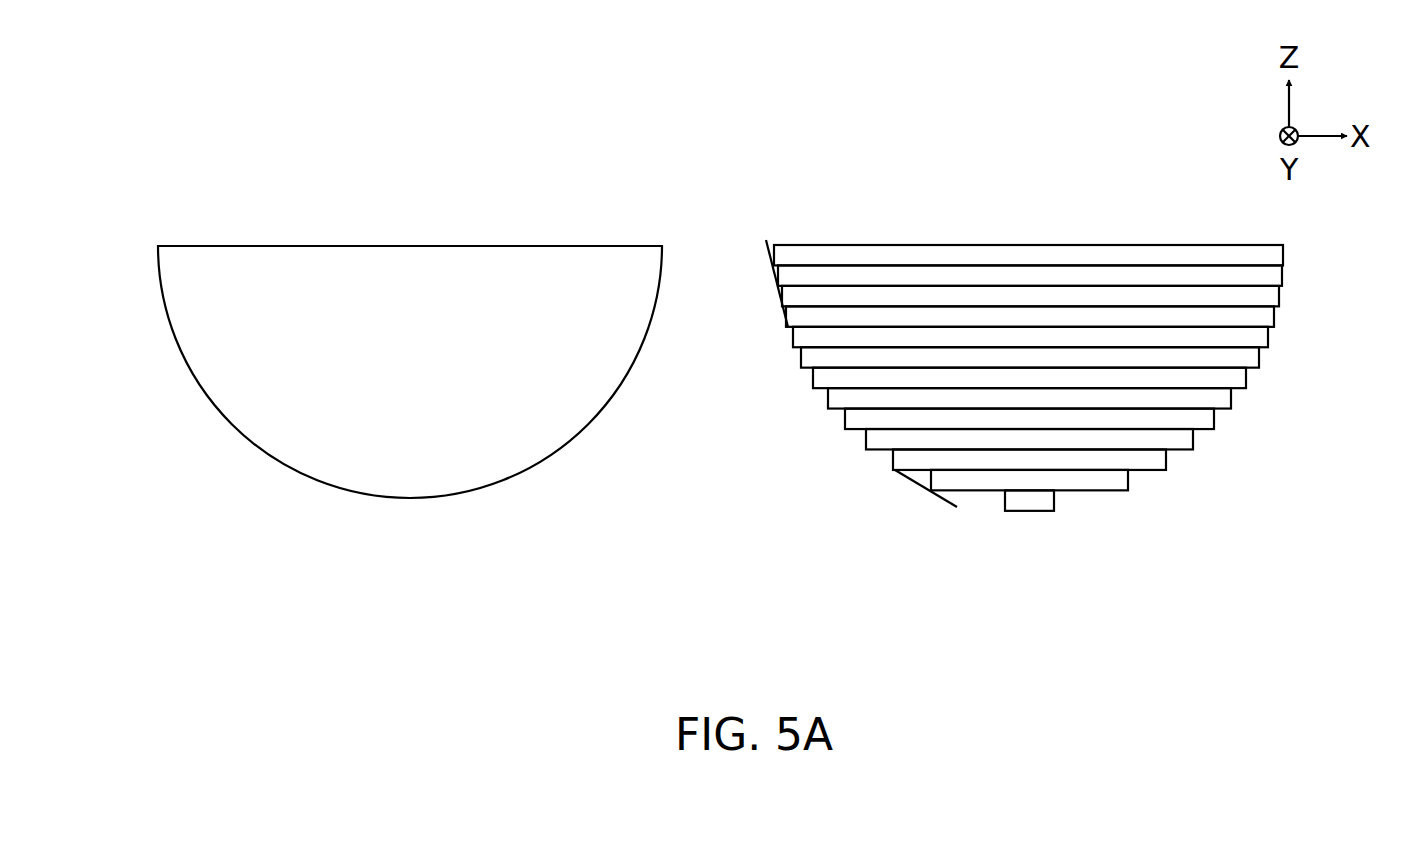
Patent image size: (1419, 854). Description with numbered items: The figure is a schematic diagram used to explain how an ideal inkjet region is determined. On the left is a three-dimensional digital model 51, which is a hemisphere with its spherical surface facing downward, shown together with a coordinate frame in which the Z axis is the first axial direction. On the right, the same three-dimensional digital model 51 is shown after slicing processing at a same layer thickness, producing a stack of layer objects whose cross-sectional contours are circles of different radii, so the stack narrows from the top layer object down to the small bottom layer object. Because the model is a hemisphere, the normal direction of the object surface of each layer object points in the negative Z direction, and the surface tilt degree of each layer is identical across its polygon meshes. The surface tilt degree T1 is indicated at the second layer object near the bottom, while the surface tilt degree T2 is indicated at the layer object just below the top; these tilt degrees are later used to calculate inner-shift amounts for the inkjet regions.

The three-dimensional digital model 51 is at (191, 185).
The surface tilt degree T1 is at (920, 487).
The surface tilt degree T2 is at (771, 281).